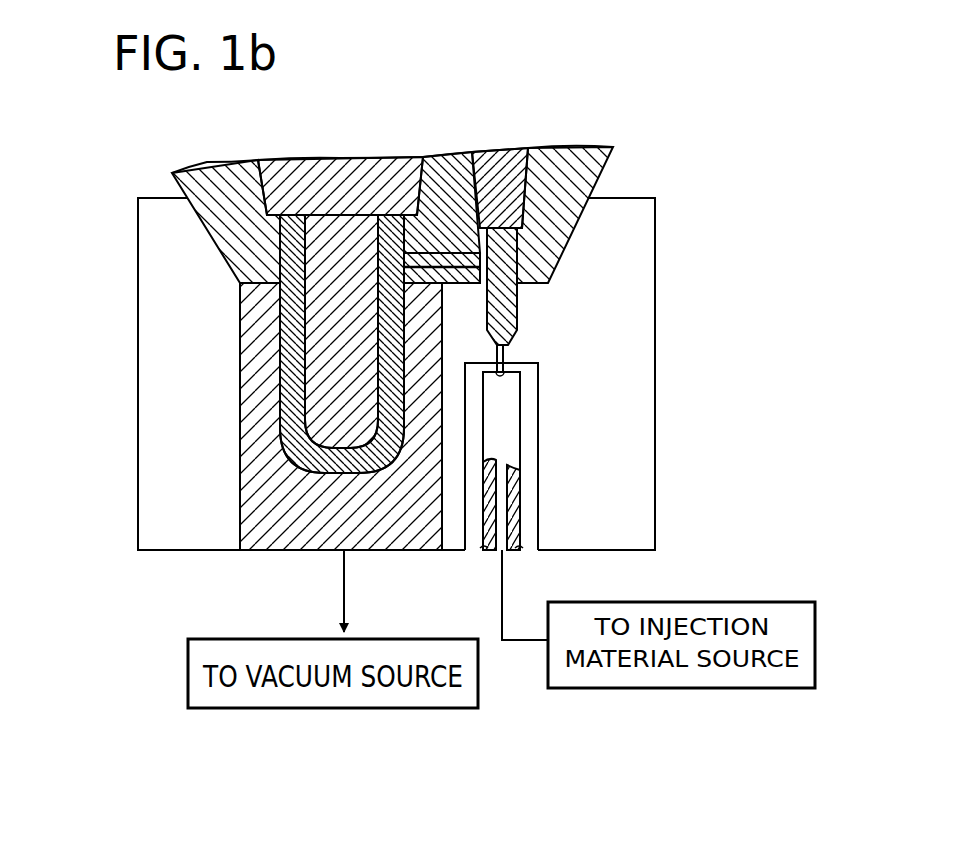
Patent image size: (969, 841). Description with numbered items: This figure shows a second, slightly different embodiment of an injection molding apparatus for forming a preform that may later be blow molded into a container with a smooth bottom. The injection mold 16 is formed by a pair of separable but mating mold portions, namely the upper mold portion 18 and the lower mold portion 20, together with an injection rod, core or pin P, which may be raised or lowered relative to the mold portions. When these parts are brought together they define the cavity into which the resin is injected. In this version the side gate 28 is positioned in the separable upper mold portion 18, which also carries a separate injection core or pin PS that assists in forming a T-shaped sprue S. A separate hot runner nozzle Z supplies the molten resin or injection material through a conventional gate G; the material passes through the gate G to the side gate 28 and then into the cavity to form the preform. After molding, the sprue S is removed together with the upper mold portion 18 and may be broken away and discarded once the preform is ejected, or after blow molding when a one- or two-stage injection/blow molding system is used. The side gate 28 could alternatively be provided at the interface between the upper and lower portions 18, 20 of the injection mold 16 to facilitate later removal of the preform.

The injection mold 16 is at (650, 125).
The first mold portion 18 is at (582, 175).
The second mold portion 20 is at (632, 425).
The side gate 28 is at (445, 257).
The injection rod, core or pin P is at (338, 180).
The separate injection core or pin PS is at (498, 162).
The sprue S is at (514, 318).
The gate G is at (505, 353).
The hot runner nozzle Z is at (503, 509).